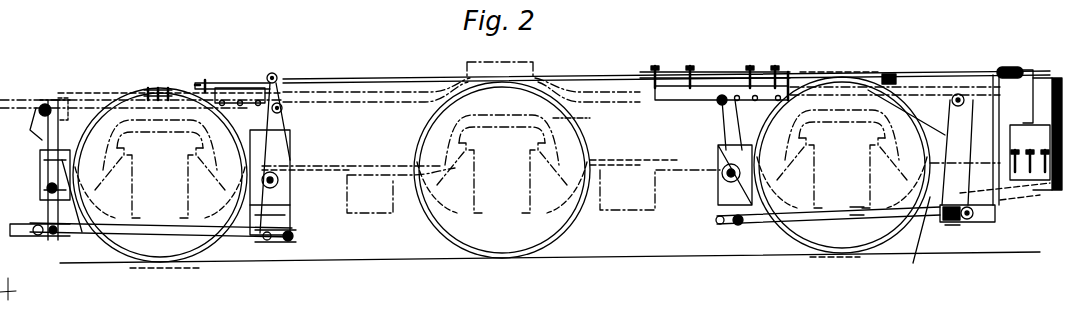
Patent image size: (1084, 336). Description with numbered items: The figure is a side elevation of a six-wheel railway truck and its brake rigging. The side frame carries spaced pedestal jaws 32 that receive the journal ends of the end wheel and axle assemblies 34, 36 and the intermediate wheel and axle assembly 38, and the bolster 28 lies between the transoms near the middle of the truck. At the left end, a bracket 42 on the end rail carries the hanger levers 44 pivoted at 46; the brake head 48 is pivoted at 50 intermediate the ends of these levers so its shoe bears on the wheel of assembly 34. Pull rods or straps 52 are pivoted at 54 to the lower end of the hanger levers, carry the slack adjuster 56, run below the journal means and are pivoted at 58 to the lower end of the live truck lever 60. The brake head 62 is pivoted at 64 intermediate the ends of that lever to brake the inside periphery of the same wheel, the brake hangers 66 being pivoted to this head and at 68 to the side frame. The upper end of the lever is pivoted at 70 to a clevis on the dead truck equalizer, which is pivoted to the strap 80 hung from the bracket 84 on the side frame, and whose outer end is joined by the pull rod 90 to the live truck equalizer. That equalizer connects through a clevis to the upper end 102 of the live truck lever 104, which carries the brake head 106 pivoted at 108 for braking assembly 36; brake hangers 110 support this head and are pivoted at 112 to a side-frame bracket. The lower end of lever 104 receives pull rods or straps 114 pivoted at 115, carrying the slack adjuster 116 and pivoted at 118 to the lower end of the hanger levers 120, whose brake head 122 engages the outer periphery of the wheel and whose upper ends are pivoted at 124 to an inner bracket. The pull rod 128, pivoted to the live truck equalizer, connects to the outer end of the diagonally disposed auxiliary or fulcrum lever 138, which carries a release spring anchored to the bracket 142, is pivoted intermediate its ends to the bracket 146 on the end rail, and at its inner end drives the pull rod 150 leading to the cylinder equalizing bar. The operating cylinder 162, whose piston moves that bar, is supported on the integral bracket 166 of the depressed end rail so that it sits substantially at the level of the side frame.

The bolster 28 is at (583, 119).
The pedestal jaws 32 is at (161, 239).
The end wheel and axle assembly 34 is at (192, 248).
The end wheel and axle assembly 36 is at (822, 240).
The intermediate wheel and axle assembly 38 is at (505, 247).
The bracket 42 is at (52, 100).
The hanger levers 44 is at (33, 130).
The pivot 46 is at (40, 108).
The brake head 48 is at (63, 163).
The pivot 50 is at (53, 185).
The pull rods or straps 52 is at (85, 233).
The pivot 54 is at (57, 234).
The slack adjuster 56 is at (18, 222).
The pivot 58 is at (287, 233).
The live truck lever 60 is at (280, 210).
The brake head 62 is at (276, 197).
The pivot 64 is at (283, 167).
The brake hangers 66 is at (280, 127).
The pivot 68 is at (280, 105).
The pivot 70 is at (272, 73).
The strap 80 is at (213, 77).
The bracket 84 is at (182, 92).
The pull rod 90 is at (370, 80).
The upper end 102 is at (728, 72).
The live truck lever 104 is at (720, 178).
The brake head 106 is at (738, 226).
The pivot 108 is at (722, 182).
The brake hangers 110 is at (724, 110).
The pivot 112 is at (718, 100).
The pull rods or straps 114 is at (857, 220).
The pivot 115 is at (718, 232).
The slack adjuster 116 is at (970, 220).
The pivot 118 is at (953, 227).
The hanger levers 120 is at (987, 205).
The brake head 122 is at (920, 241).
The pivot 124 is at (955, 96).
The pull rod 128 is at (840, 72).
The auxiliary or fulcrum lever 138 is at (1030, 78).
The bracket 142 is at (888, 72).
The bracket 146 is at (1010, 68).
The pull rod 150 is at (983, 95).
The operating cylinder 162 is at (1030, 152).
The bracket 166 is at (1035, 182).